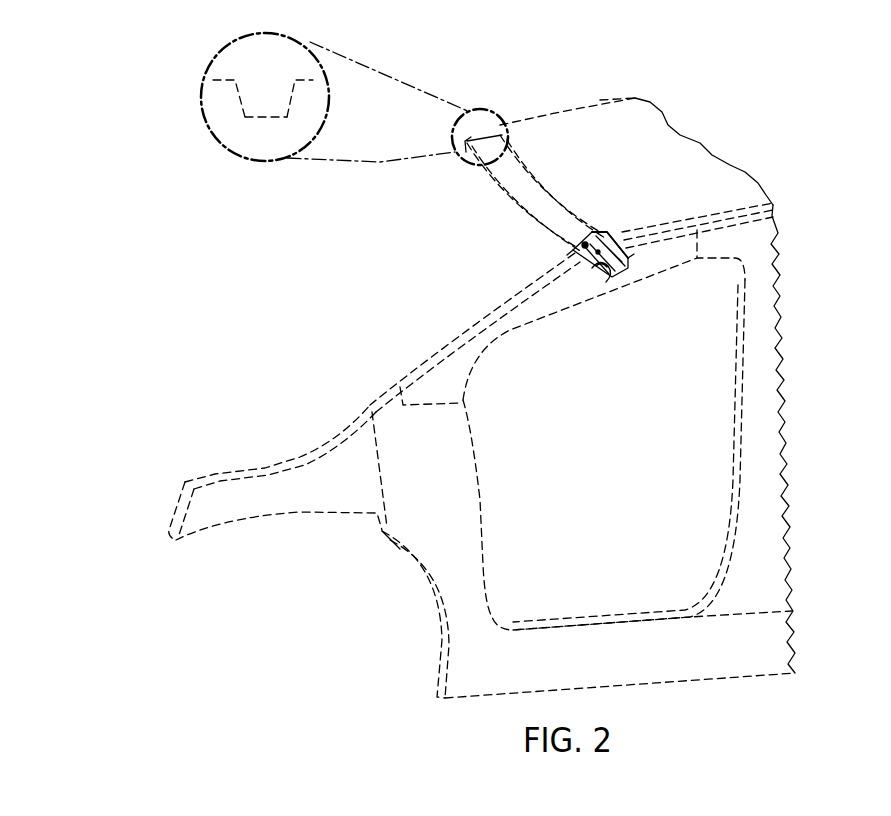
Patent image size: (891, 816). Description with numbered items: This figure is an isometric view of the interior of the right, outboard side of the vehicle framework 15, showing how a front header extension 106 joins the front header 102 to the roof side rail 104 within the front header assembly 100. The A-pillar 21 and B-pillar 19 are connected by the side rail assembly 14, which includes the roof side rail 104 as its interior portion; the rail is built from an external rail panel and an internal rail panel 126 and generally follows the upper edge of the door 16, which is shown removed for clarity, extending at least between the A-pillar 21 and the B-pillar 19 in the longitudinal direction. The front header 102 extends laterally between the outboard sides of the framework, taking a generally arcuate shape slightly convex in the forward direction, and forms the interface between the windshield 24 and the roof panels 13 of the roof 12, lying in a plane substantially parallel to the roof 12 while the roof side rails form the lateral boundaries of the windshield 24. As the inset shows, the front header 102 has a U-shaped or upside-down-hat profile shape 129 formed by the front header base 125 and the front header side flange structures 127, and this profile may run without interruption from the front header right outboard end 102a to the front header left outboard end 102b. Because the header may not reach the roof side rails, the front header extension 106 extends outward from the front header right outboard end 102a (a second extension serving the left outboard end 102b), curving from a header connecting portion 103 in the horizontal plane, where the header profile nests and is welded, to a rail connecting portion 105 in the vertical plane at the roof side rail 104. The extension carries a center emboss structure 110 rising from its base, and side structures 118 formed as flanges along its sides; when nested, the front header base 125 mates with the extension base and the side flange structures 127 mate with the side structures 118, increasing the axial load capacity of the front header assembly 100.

The roof 12 is at (587, 100).
The roof panels 13 is at (678, 142).
The side rail assembly 14 is at (800, 270).
The vehicle framework 15 is at (218, 226).
The door 16 is at (603, 484).
The B-pillar 19 is at (762, 388).
The A-pillar 21 is at (484, 350).
The windshield 24 is at (456, 271).
The front header assembly 100 is at (632, 95).
The front header 102 is at (472, 178).
The front header right outboard end 102a is at (622, 292).
The front header left outboard end 102b is at (497, 108).
The header connecting portion 103 is at (597, 228).
The roof side rail 104 is at (686, 255).
The rail connecting portion 105 is at (604, 290).
The front header extension 106 is at (616, 237).
The center emboss structure 110 is at (600, 272).
The side structures 118 is at (573, 250).
The front header base 125 is at (258, 118).
The internal rail panel 126 is at (676, 244).
The front header side flange structures 127 is at (213, 80).
The profile shape 129 is at (220, 106).